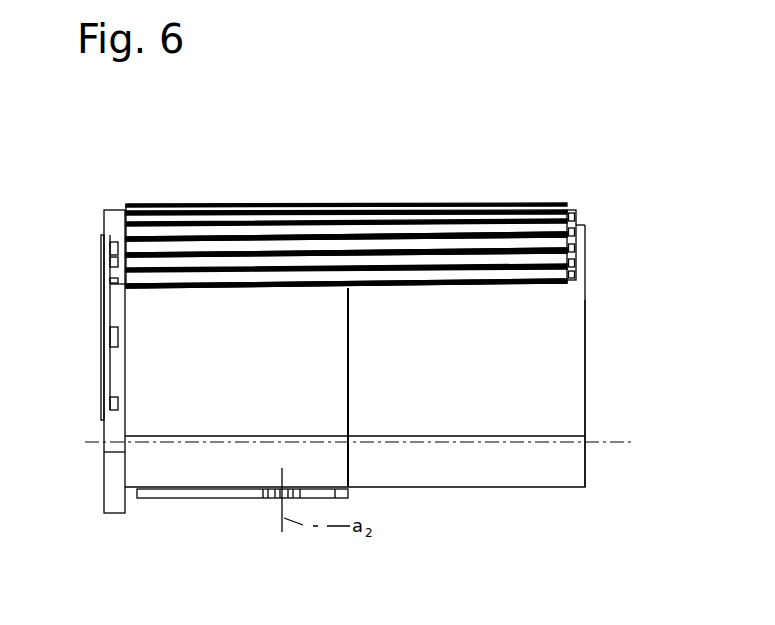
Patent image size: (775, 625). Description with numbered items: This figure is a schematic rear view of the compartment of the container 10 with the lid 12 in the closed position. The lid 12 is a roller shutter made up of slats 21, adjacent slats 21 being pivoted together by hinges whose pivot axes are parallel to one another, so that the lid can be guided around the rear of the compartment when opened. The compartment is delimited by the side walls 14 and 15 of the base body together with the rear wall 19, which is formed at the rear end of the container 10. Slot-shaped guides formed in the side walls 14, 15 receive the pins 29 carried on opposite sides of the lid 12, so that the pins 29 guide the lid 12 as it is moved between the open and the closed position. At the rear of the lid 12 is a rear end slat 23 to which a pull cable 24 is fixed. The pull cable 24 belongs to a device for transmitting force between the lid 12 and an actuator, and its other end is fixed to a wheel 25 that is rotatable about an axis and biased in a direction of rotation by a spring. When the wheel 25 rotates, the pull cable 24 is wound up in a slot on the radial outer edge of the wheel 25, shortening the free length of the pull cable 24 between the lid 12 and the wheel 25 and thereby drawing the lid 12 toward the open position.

The container 10 is at (547, 101).
The lid 12 is at (455, 247).
The side wall 14 is at (105, 375).
The side wall 15 is at (585, 358).
The rear wall 19 is at (567, 398).
The slats 21 is at (240, 247).
The rear end slat 23 is at (328, 277).
The pull cable 24 is at (350, 380).
The wheel 25 is at (177, 493).
The pins 29 is at (575, 249).